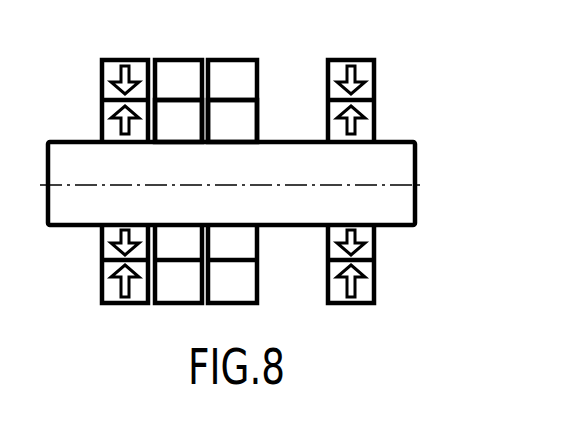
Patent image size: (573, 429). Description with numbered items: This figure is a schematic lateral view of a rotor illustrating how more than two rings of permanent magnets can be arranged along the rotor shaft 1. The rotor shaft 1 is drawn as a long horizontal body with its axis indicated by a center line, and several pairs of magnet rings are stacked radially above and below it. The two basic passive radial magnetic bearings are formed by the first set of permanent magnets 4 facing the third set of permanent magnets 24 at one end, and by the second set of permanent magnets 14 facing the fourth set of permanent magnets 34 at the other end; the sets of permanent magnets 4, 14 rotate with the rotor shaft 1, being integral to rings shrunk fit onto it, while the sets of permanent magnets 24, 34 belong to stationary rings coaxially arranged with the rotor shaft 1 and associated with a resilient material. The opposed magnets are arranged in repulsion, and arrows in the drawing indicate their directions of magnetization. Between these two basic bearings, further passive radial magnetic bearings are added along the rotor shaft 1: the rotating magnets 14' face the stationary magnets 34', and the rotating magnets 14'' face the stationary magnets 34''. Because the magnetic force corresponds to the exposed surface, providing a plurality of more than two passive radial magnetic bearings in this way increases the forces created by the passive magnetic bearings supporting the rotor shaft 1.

The rotor shaft 1 is at (404, 158).
The first set of permanent magnets 4 is at (374, 116).
The second set of permanent magnets 14 is at (94, 120).
The permanent magnets of a further passive radial magnetic bearing 14' is at (178, 140).
The permanent magnets of a further passive radial magnetic bearing 14'' is at (258, 121).
The third set of permanent magnets 24 is at (374, 78).
The fourth set of permanent magnets 34 is at (99, 101).
The permanent magnets of a further passive radial magnetic bearing 34' is at (178, 80).
The permanent magnets of a further passive radial magnetic bearing 34'' is at (258, 101).